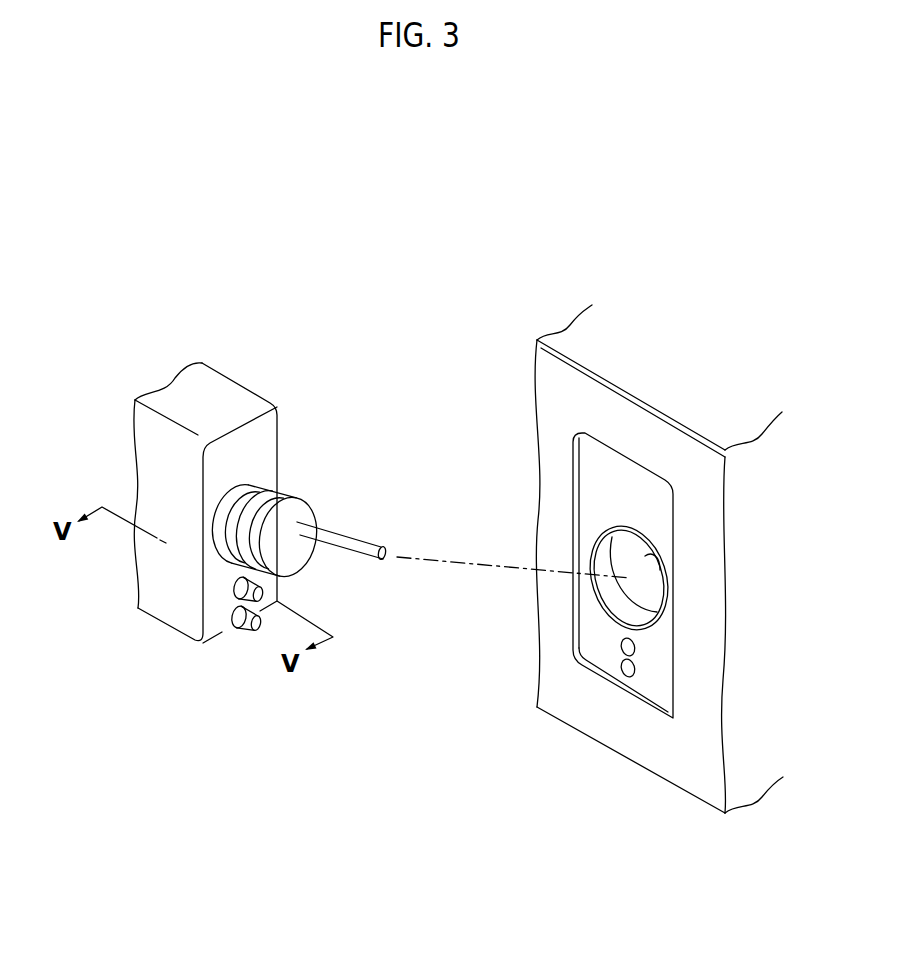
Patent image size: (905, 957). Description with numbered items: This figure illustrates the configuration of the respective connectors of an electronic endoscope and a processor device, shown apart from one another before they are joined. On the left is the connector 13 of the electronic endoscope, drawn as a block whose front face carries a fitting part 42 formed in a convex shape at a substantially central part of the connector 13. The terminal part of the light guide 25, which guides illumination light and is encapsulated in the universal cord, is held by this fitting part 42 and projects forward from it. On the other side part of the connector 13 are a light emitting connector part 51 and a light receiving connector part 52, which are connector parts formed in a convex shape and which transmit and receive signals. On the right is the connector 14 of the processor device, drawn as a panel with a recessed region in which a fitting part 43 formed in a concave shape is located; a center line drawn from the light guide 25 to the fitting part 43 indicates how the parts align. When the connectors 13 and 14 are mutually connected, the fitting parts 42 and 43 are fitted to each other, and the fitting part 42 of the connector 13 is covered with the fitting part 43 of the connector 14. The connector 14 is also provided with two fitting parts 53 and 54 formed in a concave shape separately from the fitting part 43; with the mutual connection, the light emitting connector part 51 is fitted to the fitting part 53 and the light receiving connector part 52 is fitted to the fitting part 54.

The connector 13 is at (241, 380).
The connector 14 is at (575, 491).
The light guide 25 is at (353, 540).
The fitting part 42 is at (281, 507).
The fitting part 43 is at (657, 572).
The light emitting connector part 51 is at (263, 588).
The light receiving connector part 52 is at (239, 624).
The fitting part 53 is at (636, 644).
The fitting part 54 is at (636, 669).